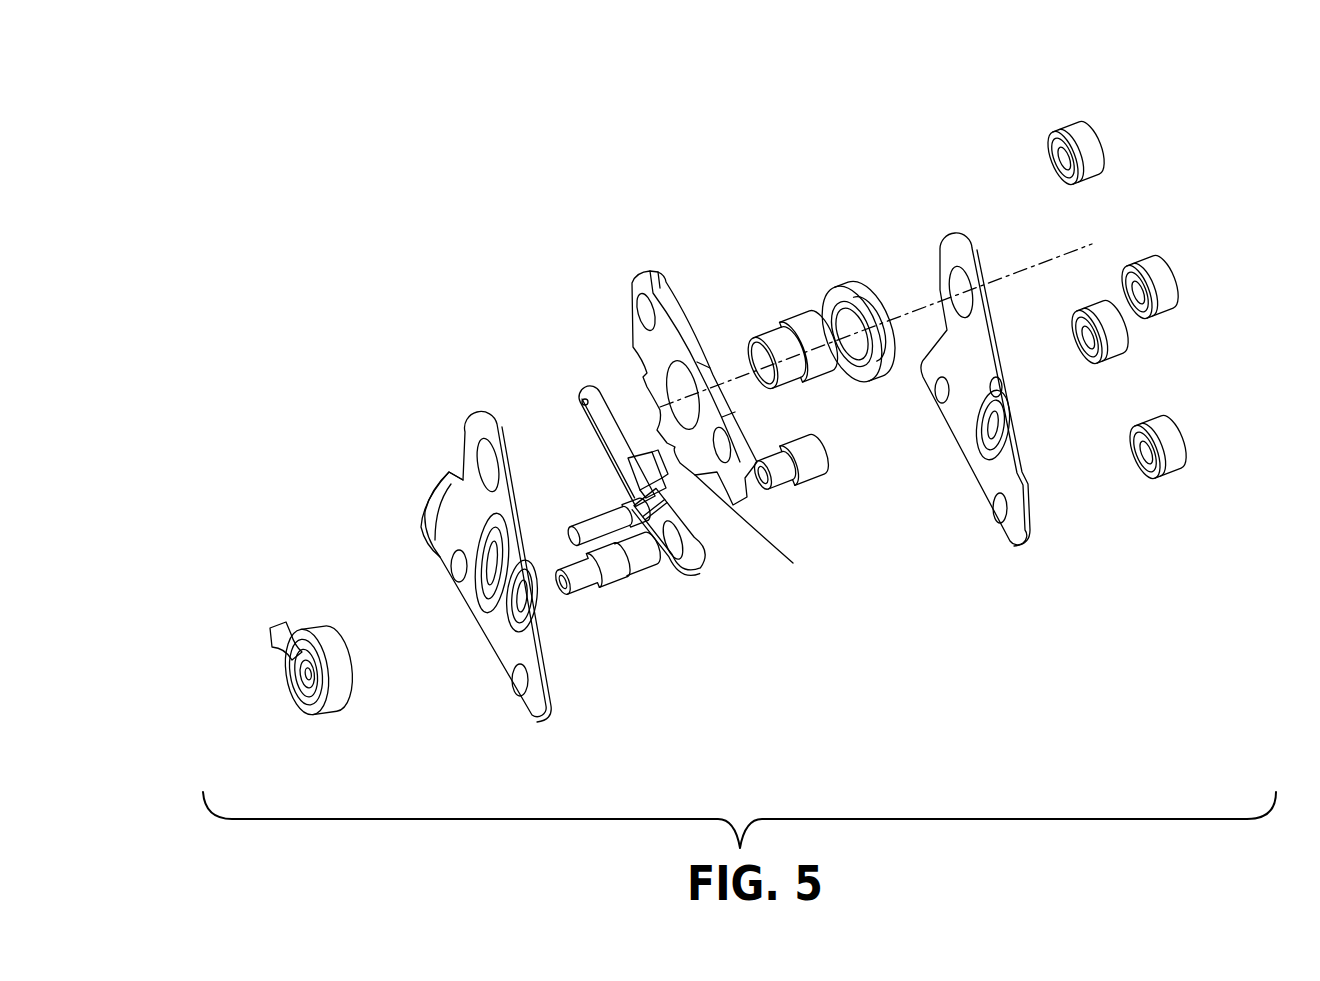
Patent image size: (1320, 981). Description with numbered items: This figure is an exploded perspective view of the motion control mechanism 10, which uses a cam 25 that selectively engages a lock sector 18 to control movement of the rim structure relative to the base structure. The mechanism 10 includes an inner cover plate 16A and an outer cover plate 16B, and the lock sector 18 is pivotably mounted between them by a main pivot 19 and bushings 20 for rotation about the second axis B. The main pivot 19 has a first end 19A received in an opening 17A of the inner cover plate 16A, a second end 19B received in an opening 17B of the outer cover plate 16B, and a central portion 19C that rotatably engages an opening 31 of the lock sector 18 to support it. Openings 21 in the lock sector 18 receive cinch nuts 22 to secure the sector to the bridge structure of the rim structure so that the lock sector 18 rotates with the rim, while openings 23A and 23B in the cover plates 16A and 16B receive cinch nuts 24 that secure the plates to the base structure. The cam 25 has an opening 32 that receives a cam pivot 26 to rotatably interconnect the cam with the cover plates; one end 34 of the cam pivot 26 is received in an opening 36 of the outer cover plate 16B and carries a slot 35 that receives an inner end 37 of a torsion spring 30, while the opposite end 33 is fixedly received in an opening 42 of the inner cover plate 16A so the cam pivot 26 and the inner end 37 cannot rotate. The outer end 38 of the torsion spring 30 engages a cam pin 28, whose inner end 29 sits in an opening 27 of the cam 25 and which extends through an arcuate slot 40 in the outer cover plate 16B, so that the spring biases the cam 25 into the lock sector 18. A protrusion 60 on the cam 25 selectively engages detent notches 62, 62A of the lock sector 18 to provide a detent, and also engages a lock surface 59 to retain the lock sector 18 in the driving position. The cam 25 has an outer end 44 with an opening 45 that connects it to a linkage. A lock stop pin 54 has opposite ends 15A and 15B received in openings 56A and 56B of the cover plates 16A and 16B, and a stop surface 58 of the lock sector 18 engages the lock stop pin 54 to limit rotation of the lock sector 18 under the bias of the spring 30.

The motion control mechanism 10 is at (873, 146).
The second axis B is at (1020, 268).
The end of lock stop pin 15A is at (813, 467).
The end of lock stop pin 15B is at (828, 494).
The inner cover plate 16A is at (1030, 466).
The outer cover plate 16B is at (454, 589).
The opening of inner cover plate 17A is at (999, 387).
The opening of outer cover plate 17B is at (485, 458).
The lock sector 18 is at (670, 365).
The main pivot 19 is at (821, 345).
The first end of main pivot 19A is at (838, 344).
The second end of main pivot 19B is at (788, 378).
The central portion of main pivot 19C is at (800, 322).
The bushings 20 is at (862, 290).
The openings of lock sector 21 is at (640, 305).
The cinch nuts 22 is at (1100, 192).
The openings of inner cover plate 23A is at (938, 404).
The openings of outer cover plate 23B is at (445, 557).
The cinch nuts 24 is at (1128, 366).
The cam 25 is at (720, 566).
The cam pivot 26 is at (598, 583).
The opening of cam 27 is at (630, 466).
The cam pin 28 is at (592, 491).
The inner end of cam pin 29 is at (621, 503).
The torsion spring 30 is at (274, 634).
The opening of lock sector 31 is at (690, 360).
The opening of cam 32 is at (690, 565).
The end of cam pivot 33 is at (665, 565).
The end of cam pivot 34 is at (586, 588).
The slot 35 is at (570, 560).
The opening of outer cover plate 36 is at (519, 614).
The inner end of torsion spring 37 is at (300, 683).
The outer end of torsion spring 38 is at (270, 636).
The arcuate slot 40 is at (485, 590).
The opening of inner cover plate 42 is at (985, 424).
The outer end of cam 44 is at (580, 433).
The opening of cam outer end 45 is at (580, 404).
The lock stop pin 54 is at (807, 478).
The opening of inner cover plate 56A is at (999, 392).
The opening of outer cover plate 56B is at (486, 498).
The stop surface 58 is at (778, 548).
The lock surface 59 is at (698, 507).
The protrusion 60 is at (648, 422).
The detent notch 62 is at (612, 390).
The detent notch 62A is at (636, 362).